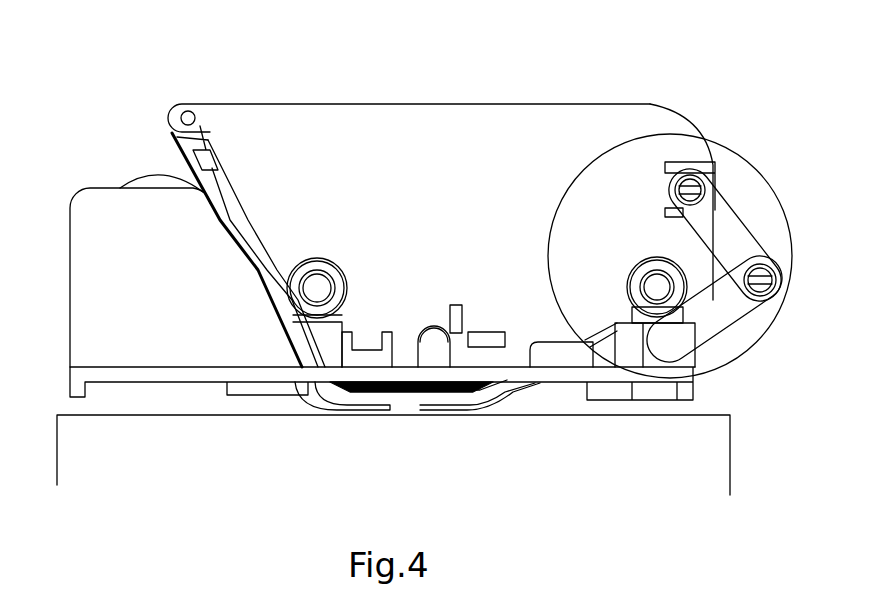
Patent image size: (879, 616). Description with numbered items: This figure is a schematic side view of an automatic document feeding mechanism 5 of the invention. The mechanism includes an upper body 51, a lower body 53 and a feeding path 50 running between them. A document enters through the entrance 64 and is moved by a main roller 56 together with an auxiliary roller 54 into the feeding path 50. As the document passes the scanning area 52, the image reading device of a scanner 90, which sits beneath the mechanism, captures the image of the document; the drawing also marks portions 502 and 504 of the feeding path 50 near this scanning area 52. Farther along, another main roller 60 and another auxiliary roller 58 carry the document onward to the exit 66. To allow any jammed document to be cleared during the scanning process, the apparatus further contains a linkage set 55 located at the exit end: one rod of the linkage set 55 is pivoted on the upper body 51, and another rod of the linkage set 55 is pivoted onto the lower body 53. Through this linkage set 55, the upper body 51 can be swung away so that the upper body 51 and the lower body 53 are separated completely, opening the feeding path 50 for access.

The printer head assembly 5 is at (417, 85).
The upper body 51 is at (450, 130).
The entrance 64 is at (170, 162).
The auxiliary roller 54 is at (280, 312).
The lower body 53 is at (120, 293).
The main roller 56 is at (327, 270).
The feeding path 50 is at (333, 392).
The thin plate portion 502 is at (377, 387).
The scanning area 52 is at (402, 410).
The strip portion 504 is at (480, 403).
The scanner 90 is at (712, 462).
The main roller 60 is at (647, 275).
The auxiliary roller 58 is at (695, 357).
The linkage set 55 is at (745, 250).
The exit 66 is at (713, 345).